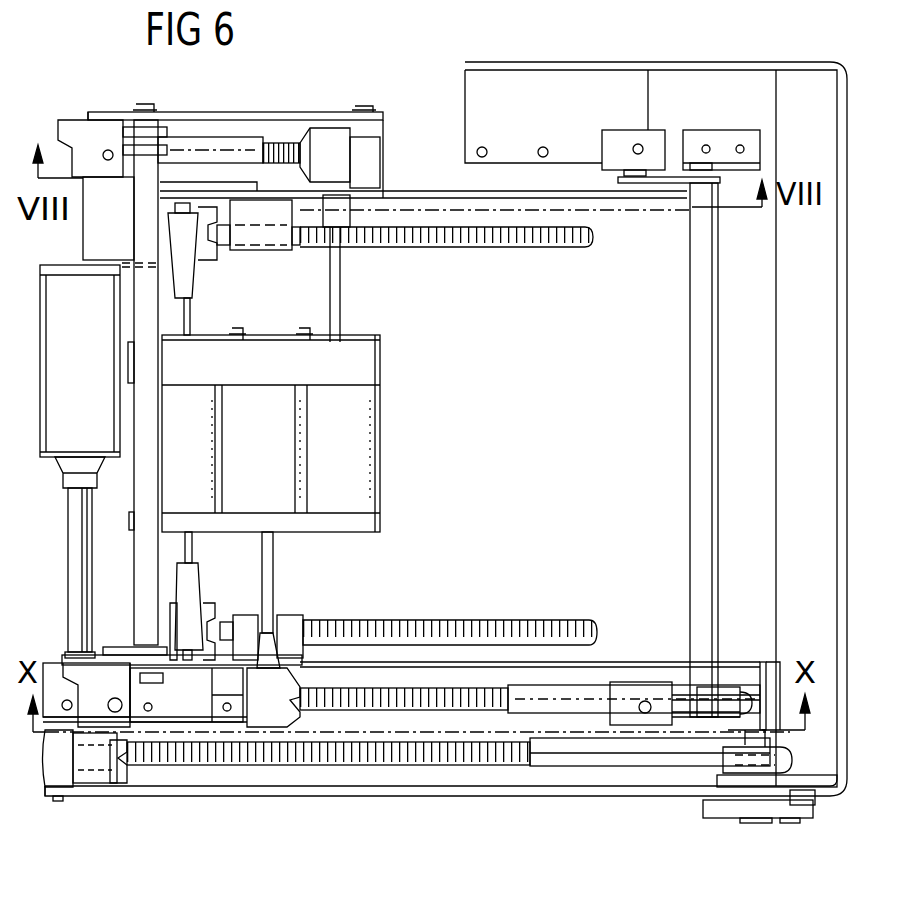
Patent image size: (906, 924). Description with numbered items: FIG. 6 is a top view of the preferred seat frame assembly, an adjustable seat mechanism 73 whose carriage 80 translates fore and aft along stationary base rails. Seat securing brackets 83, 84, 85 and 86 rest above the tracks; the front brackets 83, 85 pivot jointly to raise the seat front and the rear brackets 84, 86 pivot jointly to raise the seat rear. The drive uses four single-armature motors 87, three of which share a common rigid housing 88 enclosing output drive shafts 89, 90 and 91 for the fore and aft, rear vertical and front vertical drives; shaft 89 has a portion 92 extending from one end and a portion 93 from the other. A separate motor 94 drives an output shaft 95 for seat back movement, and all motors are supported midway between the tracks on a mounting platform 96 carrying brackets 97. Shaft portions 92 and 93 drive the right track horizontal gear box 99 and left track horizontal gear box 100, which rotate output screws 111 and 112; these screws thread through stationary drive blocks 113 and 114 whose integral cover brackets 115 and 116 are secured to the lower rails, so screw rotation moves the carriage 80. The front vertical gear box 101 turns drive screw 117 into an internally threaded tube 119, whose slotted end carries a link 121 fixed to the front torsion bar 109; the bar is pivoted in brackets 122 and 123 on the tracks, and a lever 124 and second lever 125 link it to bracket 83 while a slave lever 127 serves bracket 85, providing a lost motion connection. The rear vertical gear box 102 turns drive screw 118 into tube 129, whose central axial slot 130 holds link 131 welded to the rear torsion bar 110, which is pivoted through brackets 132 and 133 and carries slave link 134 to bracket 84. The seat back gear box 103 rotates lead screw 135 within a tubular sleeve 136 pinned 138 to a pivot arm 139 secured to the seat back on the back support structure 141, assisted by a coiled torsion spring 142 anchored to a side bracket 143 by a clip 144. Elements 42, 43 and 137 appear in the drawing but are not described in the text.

The frame plate 42 is at (557, 178).
The shaft 43 is at (460, 678).
The adjustable seat mechanism 73 is at (508, 460).
The carriage 80 is at (680, 432).
The seat securing bracket 83 is at (82, 145).
The seat securing bracket 84 is at (615, 142).
The seat securing bracket 85 is at (97, 716).
The seat securing bracket 86 is at (625, 692).
The single-armature motors 87 is at (210, 463).
The common rigid housing 88 is at (358, 362).
The output drive shaft 89 is at (220, 300).
The output drive shaft 90 is at (270, 545).
The output drive shaft 91 is at (335, 317).
The shaft portion 92 is at (190, 540).
The shaft portion 93 is at (190, 330).
The motor 94 is at (95, 398).
The output shaft 95 is at (77, 515).
The mounting platform 96 is at (97, 232).
The bracket 97 is at (80, 272).
The right track horizontal gear box 99 is at (217, 617).
The left track horizontal gear box 100 is at (202, 262).
The front vertical gear box 101 is at (320, 137).
The rear vertical gear box 102 is at (277, 695).
The seat back gear box 103 is at (110, 760).
The front torsion bar 109 is at (143, 557).
The rear torsion bar 110 is at (718, 392).
The output screw 111 is at (507, 622).
The output screw 112 is at (478, 245).
The drive block 113 is at (290, 620).
The drive block 114 is at (283, 248).
The cover bracket 115 is at (305, 655).
The cover bracket 116 is at (288, 205).
The drive screw 117 is at (287, 142).
The drive screw 118 is at (413, 707).
The internally threaded tube 119 is at (238, 145).
The link 121 is at (167, 150).
The bracket 122 is at (97, 112).
The bracket 123 is at (192, 667).
The lever 124 is at (143, 128).
The second lever 125 is at (82, 118).
The slave lever 127 is at (83, 652).
The internally threaded tube 129 is at (558, 695).
The central axial slot 130 is at (747, 705).
The link 131 is at (727, 690).
The bracket 132 is at (762, 663).
The bracket 133 is at (722, 145).
The slave link 134 is at (667, 183).
The lead screw 135 is at (352, 767).
The tubular sleeve 136 is at (128, 650).
The plate 137 is at (747, 775).
The pivot pin 138 is at (737, 733).
The pivot arm 139 is at (836, 786).
The seat back support structure 141 is at (800, 442).
The coiled torsion spring 142 is at (805, 823).
The side bracket 143 is at (557, 790).
The clip 144 is at (788, 822).